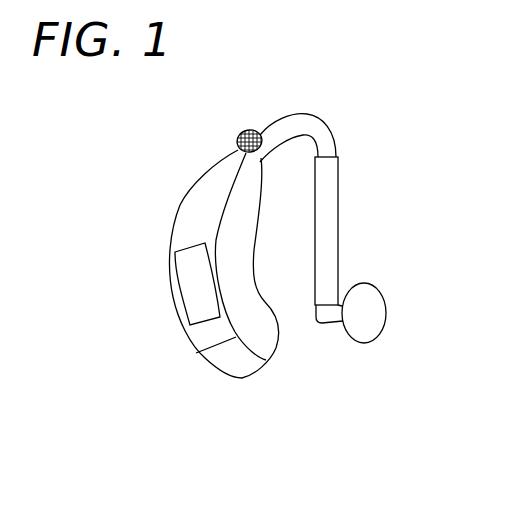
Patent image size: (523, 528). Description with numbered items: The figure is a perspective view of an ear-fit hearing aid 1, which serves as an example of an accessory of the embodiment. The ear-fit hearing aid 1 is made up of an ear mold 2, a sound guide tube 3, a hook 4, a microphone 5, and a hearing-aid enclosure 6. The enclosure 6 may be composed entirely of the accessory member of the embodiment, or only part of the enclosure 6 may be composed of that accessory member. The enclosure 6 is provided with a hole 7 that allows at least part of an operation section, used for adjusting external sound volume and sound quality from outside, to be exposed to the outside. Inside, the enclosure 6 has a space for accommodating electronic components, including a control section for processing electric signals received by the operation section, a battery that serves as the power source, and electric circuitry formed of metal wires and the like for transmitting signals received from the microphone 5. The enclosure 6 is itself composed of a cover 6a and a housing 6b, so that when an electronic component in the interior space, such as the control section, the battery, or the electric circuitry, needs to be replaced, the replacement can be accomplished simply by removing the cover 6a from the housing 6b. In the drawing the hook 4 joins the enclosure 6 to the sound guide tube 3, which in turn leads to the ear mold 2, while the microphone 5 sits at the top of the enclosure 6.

The ear-fit hearing aid 1 is at (373, 123).
The ear mold 2 is at (368, 315).
The sound guide tube 3 is at (325, 242).
The hook 4 is at (308, 125).
The microphone 5 is at (243, 130).
The hearing-aid enclosure 6 is at (168, 254).
The cover 6a is at (225, 361).
The housing 6b is at (257, 325).
The hole 7 is at (193, 287).